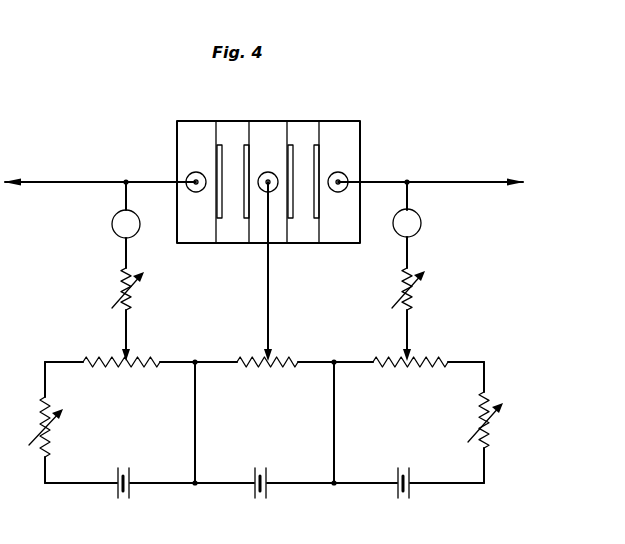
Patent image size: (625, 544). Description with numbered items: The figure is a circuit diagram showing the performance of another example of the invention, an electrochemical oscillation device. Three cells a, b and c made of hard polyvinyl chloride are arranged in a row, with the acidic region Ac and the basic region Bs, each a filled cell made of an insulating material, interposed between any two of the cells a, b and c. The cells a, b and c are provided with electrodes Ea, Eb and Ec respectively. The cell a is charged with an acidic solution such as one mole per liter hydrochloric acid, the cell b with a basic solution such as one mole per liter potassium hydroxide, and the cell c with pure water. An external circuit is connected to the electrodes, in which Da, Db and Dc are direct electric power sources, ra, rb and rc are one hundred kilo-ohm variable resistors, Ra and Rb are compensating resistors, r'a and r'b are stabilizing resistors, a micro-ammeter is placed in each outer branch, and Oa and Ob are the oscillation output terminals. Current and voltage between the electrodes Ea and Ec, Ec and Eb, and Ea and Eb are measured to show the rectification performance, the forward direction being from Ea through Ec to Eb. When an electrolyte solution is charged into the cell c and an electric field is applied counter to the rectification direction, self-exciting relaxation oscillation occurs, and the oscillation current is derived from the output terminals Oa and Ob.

The oscillation output terminal Oa is at (100, 168).
The oscillation output terminal Ob is at (431, 167).
The acidic region Ac is at (232, 127).
The basic region Bs is at (302, 128).
The cell a is at (203, 182).
The cell c is at (268, 182).
The cell b is at (331, 182).
The electrode Ea is at (192, 193).
The electrode Ec is at (271, 192).
The electrode Eb is at (337, 193).
The compensating resistor Ra is at (117, 314).
The compensating resistor Rb is at (419, 314).
The variable resistor ra is at (121, 350).
The variable resistor rc is at (267, 350).
The variable resistor rb is at (410, 350).
The stabilizing resistor r'a is at (35, 427).
The stabilizing resistor r'b is at (475, 420).
The direct electric power source Da is at (124, 469).
The direct electric power source Dc is at (263, 469).
The direct electric power source Db is at (402, 469).